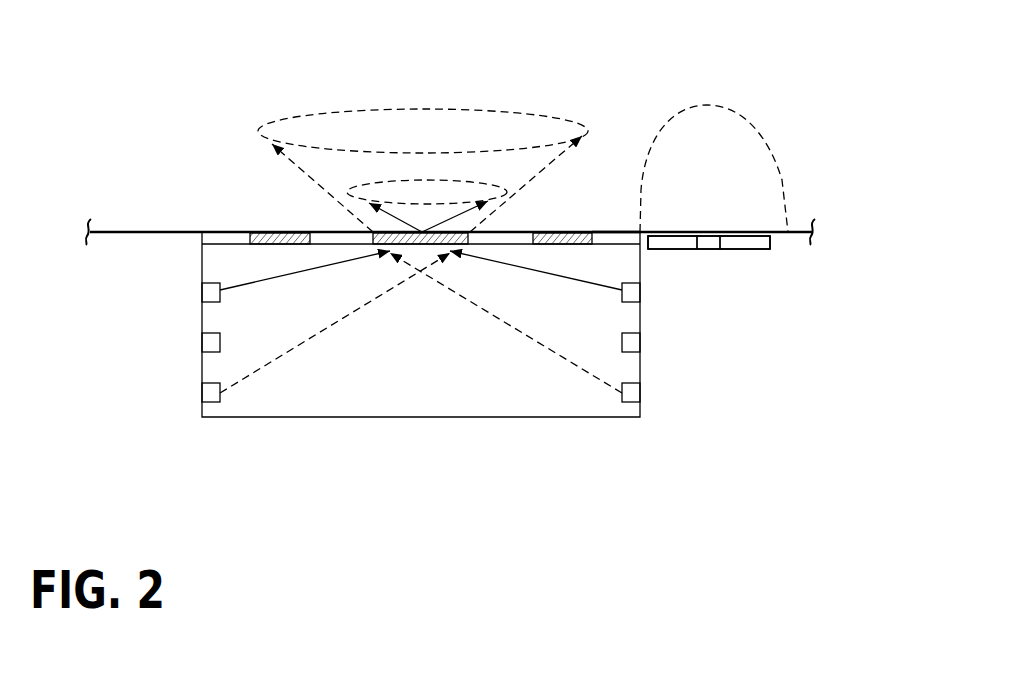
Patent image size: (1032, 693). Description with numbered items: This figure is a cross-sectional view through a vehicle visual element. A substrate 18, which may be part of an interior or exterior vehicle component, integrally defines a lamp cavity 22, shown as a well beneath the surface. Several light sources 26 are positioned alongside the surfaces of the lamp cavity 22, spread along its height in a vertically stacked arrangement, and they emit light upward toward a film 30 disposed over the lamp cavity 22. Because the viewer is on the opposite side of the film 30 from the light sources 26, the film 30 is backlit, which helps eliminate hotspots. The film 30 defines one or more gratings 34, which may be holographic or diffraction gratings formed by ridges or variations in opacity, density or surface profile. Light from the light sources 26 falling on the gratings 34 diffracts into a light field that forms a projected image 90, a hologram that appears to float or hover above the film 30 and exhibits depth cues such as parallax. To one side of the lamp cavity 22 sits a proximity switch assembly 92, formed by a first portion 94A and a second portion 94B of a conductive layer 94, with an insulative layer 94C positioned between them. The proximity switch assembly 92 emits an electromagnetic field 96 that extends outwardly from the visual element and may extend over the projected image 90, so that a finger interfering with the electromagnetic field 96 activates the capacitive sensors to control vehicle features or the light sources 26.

The substrate 18 is at (148, 232).
The lamp cavity 22 is at (450, 366).
The light sources 26 is at (210, 291).
The film 30 is at (613, 232).
The grating 34 is at (265, 232).
The projected image 90 is at (587, 133).
The proximity switch assembly 92 is at (783, 260).
The conductive layer 94 is at (777, 241).
The first portion 94A is at (677, 249).
The second portion 94B is at (750, 249).
The insulative layer 94C is at (708, 249).
The electromagnetic field 96 is at (703, 100).